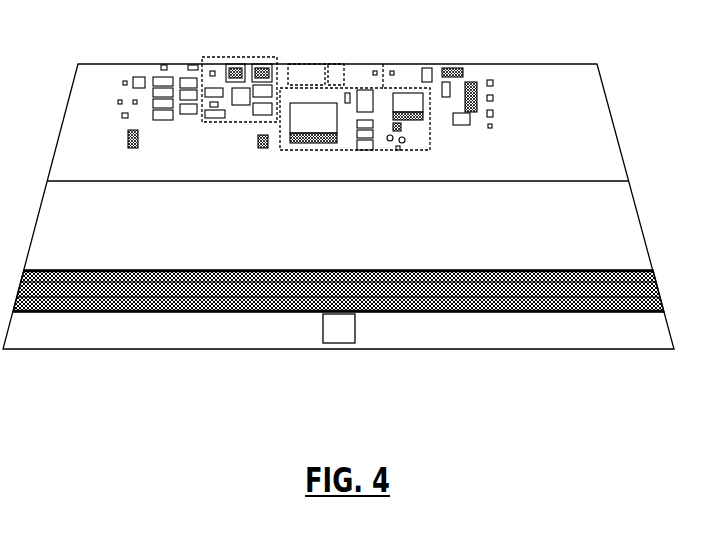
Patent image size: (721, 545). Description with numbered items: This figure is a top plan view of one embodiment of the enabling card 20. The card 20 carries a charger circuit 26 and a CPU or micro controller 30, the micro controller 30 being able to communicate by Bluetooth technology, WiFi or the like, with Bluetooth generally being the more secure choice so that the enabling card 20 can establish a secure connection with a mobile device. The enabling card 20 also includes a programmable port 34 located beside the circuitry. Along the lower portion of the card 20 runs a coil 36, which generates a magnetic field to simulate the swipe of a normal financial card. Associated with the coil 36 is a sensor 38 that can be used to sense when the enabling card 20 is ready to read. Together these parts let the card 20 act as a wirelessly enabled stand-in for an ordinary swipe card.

The enabling card 20 is at (565, 64).
The charger circuit 26 is at (237, 57).
The micro controller 30 is at (383, 90).
The programmable port 34 is at (317, 64).
The coil 36 is at (512, 315).
The sensor 38 is at (338, 343).